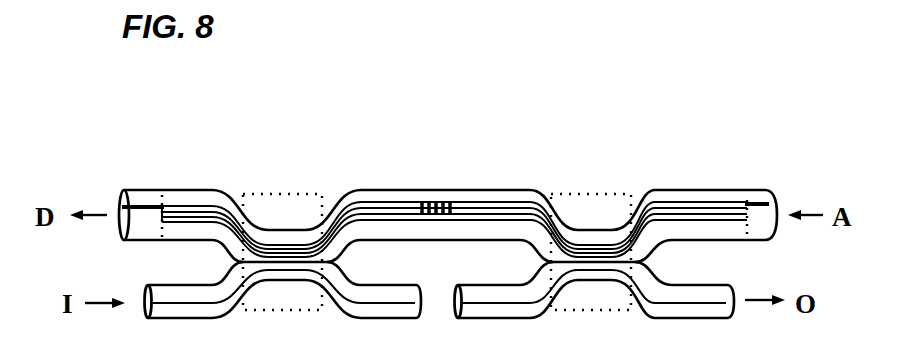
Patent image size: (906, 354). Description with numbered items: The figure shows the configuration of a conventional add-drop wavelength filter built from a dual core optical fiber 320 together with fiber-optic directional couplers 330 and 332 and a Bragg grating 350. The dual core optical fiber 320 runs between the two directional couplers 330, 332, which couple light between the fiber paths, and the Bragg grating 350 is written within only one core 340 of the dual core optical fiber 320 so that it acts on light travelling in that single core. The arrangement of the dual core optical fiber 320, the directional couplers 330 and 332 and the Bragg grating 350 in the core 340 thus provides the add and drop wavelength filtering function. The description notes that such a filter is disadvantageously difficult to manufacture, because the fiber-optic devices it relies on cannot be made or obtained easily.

The dual core optical fiber 320 is at (354, 189).
The directional coupler 330 is at (279, 192).
The directional coupler 332 is at (587, 192).
The core 340 is at (141, 197).
The Bragg grating 350 is at (433, 200).